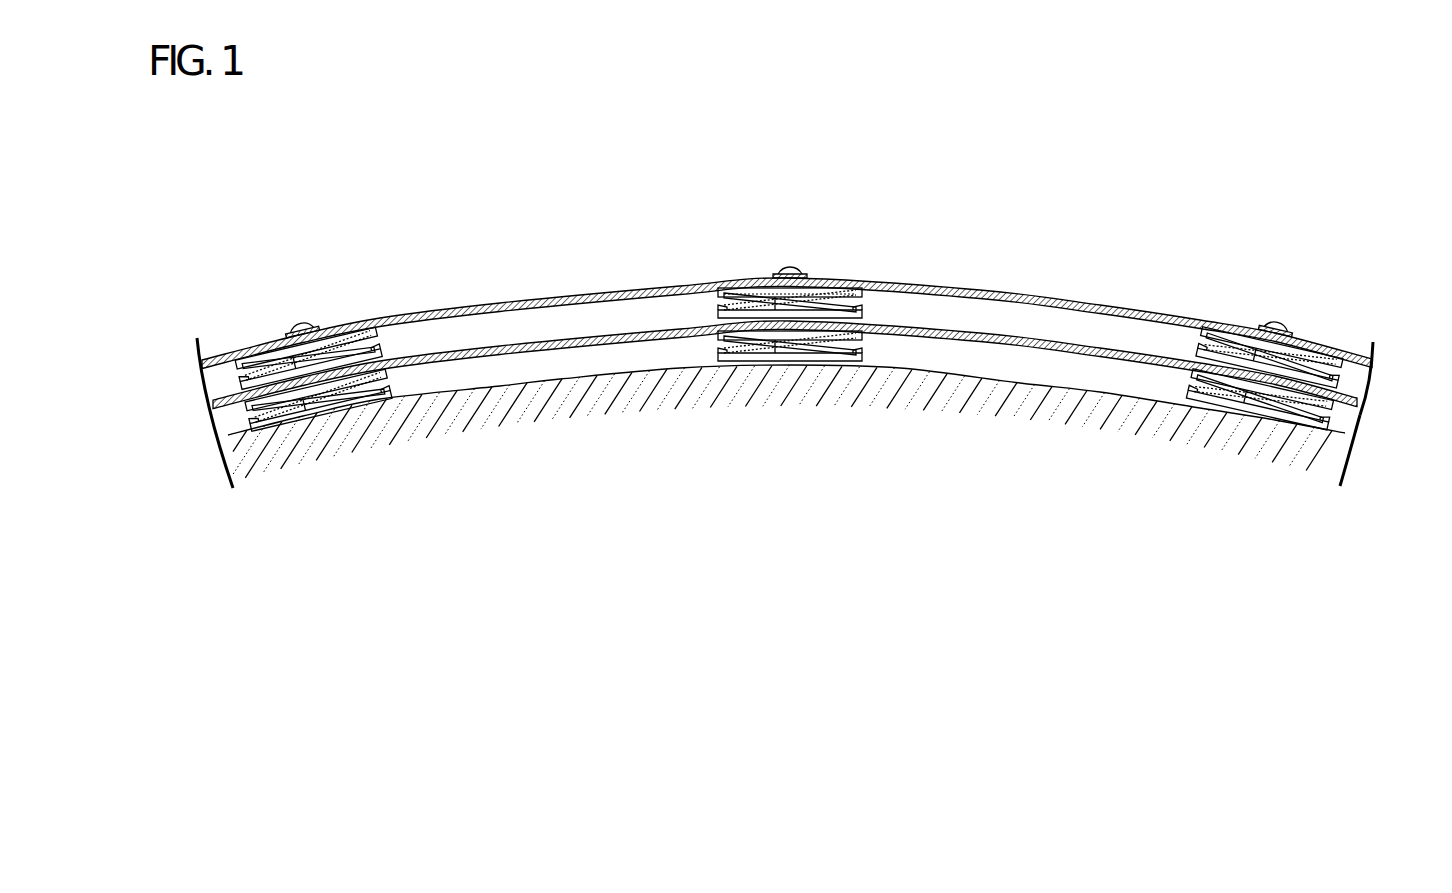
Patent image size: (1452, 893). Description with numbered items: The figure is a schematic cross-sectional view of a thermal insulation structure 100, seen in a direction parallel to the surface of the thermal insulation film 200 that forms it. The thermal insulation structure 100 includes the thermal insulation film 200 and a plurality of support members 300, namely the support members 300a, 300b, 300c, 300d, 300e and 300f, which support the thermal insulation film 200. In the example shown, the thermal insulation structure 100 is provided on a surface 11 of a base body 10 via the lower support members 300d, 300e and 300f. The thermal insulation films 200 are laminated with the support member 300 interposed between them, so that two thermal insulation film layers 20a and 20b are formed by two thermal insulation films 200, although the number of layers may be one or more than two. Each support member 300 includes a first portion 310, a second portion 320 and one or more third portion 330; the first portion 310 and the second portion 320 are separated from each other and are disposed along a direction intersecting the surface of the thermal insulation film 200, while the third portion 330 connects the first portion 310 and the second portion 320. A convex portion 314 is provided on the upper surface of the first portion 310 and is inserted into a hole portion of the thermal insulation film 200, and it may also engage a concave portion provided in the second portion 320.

The thermal insulation structure 100 is at (481, 215).
The base body 10 is at (1100, 410).
The surface 11 is at (232, 440).
The thermal insulation film layer 20a is at (1388, 383).
The thermal insulation film layer 20b is at (1372, 437).
The thermal insulation film 200 is at (403, 314).
The support member 300 is at (870, 304).
The support member 300a is at (827, 247).
The support member 300b is at (1346, 372).
The support member 300c is at (228, 376).
The support member 300d is at (694, 350).
The support member 300e is at (1333, 432).
The support member 300f is at (230, 422).
The first portion 310 is at (790, 300).
The convex portion 314 is at (307, 320).
The second portion 320 is at (790, 311).
The third portion 330 is at (790, 292).